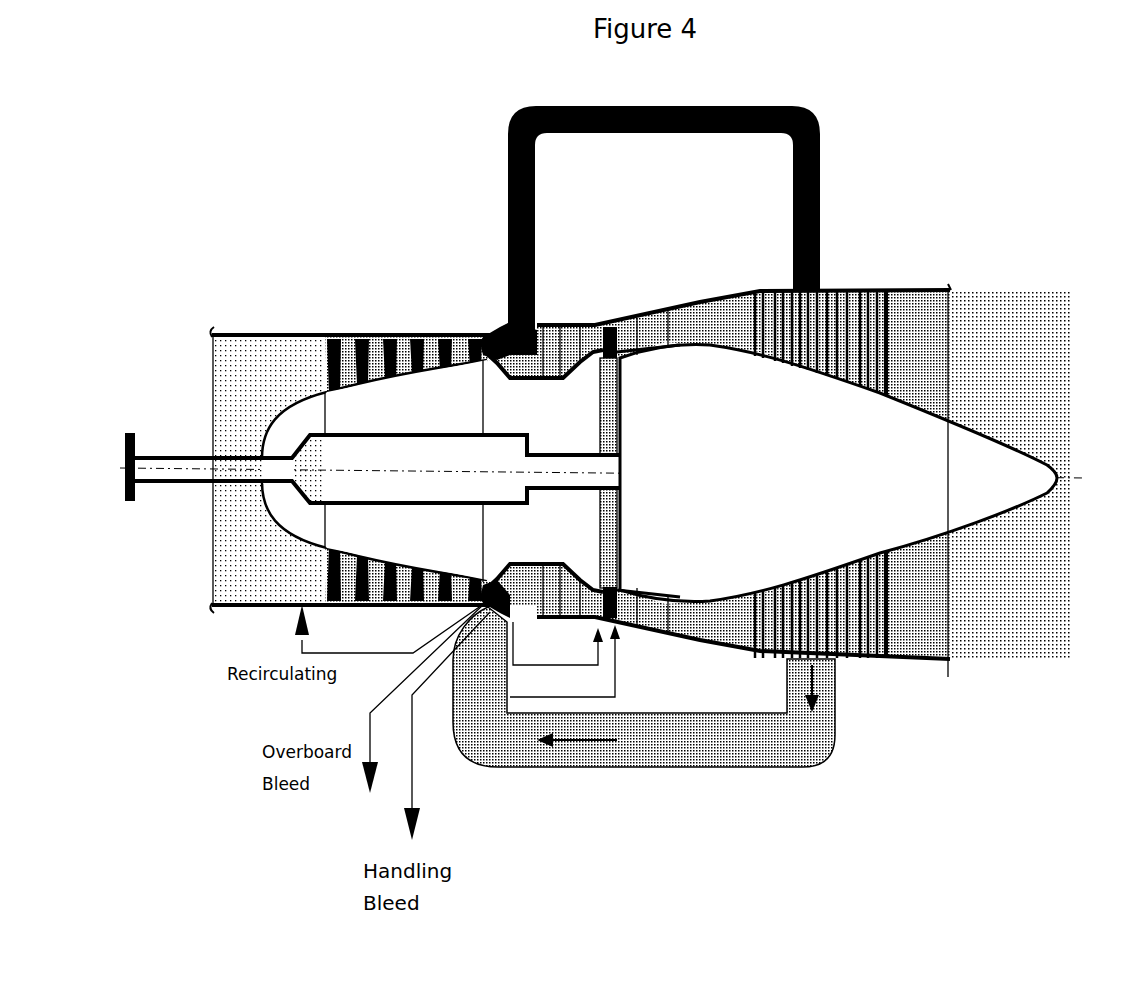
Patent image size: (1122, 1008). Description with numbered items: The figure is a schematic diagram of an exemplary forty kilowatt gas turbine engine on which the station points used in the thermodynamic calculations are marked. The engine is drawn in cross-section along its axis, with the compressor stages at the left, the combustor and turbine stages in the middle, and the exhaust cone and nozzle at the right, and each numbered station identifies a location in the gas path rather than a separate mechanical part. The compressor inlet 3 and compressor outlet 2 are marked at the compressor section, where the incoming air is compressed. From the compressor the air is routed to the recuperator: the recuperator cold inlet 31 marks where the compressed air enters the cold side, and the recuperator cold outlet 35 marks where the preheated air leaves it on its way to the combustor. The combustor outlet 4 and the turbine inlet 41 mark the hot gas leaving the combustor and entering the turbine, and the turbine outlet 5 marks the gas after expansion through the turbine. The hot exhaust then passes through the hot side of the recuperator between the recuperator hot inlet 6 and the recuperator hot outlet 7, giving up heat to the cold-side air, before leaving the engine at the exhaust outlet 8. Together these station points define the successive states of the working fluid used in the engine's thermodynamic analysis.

The compressor outlet 2 is at (313, 372).
The compressor inlet 3 is at (490, 337).
The recuperator cold inlet 31 is at (500, 330).
The combustor outlet 4 is at (582, 325).
The turbine inlet 41 is at (602, 325).
The turbine outlet 5 is at (628, 328).
The recuperator hot inlet 6 is at (743, 292).
The recuperator hot outlet 7 is at (902, 400).
The exhaust outlet 8 is at (950, 290).
The recuperator cold outlet 35 is at (644, 687).